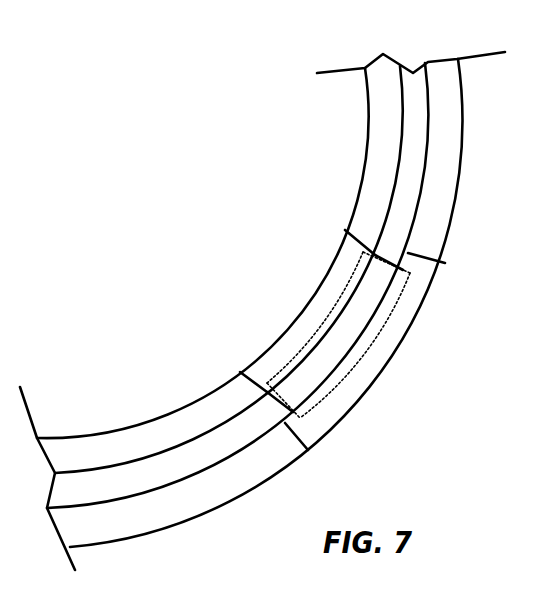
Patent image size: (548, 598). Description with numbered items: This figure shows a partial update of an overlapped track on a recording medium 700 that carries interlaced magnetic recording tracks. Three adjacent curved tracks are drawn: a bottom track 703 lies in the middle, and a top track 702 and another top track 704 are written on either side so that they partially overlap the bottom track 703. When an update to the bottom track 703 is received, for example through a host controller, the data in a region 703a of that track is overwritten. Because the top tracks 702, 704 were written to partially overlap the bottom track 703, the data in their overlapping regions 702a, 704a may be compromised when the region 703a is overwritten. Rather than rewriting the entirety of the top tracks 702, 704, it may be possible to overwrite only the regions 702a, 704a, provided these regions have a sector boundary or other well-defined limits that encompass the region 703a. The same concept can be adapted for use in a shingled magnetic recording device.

The recording medium 700 is at (266, 311).
The top track 702 is at (143, 432).
The overlapping region of track 702 702a is at (328, 277).
The bottom track 703 is at (232, 450).
The overwritten region of bottom track 703a is at (308, 373).
The top track 704 is at (183, 512).
The overlapping region of track 704 704a is at (335, 417).